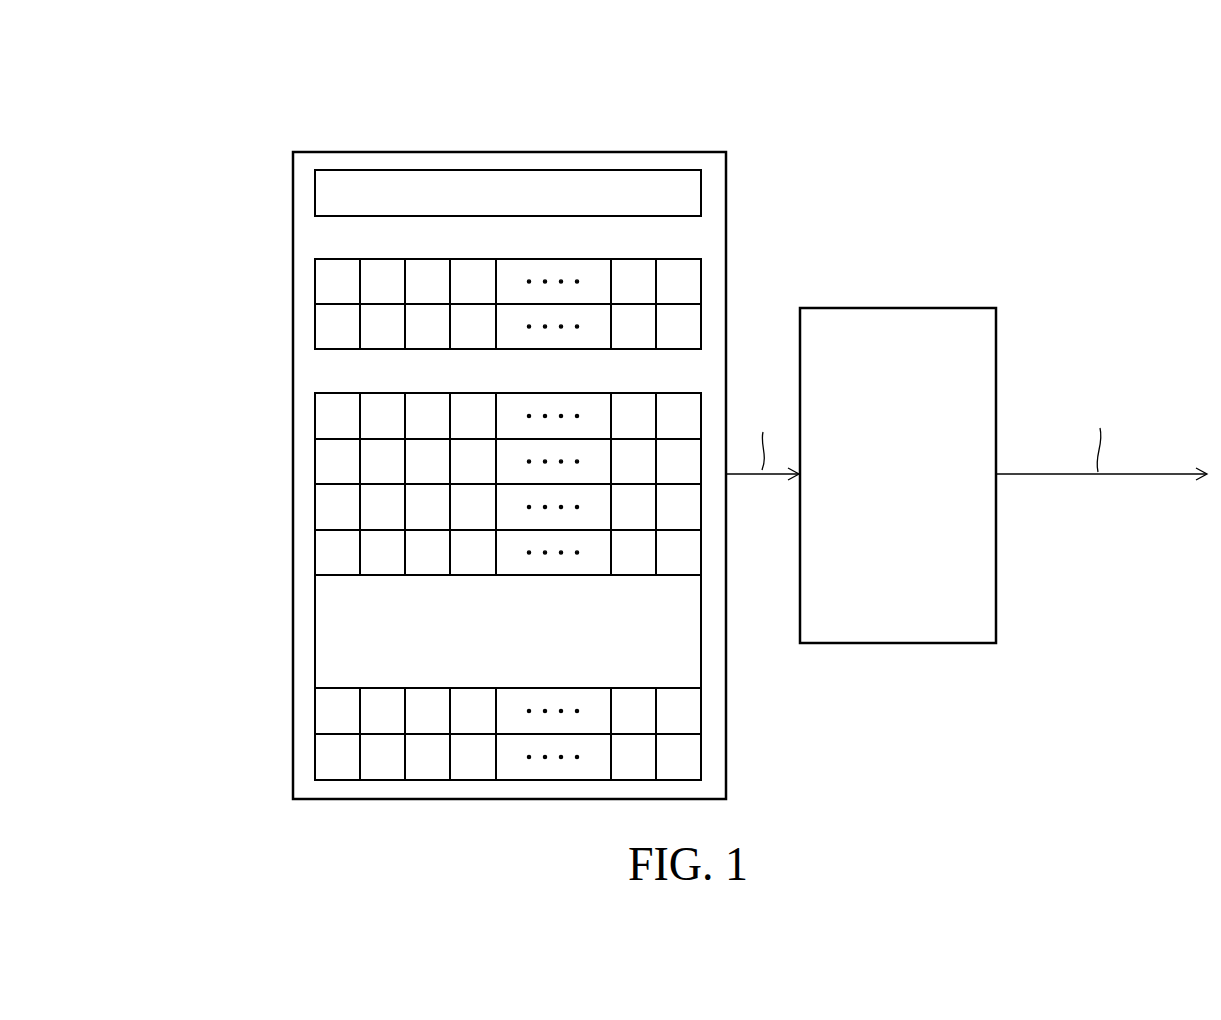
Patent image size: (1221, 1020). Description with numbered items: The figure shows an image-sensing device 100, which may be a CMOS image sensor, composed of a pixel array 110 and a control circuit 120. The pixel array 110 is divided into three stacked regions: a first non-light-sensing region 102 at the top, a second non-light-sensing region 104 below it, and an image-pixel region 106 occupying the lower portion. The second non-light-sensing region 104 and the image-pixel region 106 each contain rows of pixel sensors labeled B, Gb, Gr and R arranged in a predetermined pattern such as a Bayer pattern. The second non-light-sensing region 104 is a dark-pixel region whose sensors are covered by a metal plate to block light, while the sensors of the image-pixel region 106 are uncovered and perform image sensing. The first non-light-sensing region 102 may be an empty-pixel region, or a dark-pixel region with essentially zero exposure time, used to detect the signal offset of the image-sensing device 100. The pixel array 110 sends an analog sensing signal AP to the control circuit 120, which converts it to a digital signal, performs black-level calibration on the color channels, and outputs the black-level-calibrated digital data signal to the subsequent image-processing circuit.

The image-sensing device 100 is at (176, 106).
The pixel array 110 is at (293, 152).
The first non-light-sensing region 102 is at (315, 191).
The second non-light-sensing region 104 is at (315, 259).
The image-pixel region 106 is at (315, 393).
The control circuit 120 is at (800, 308).